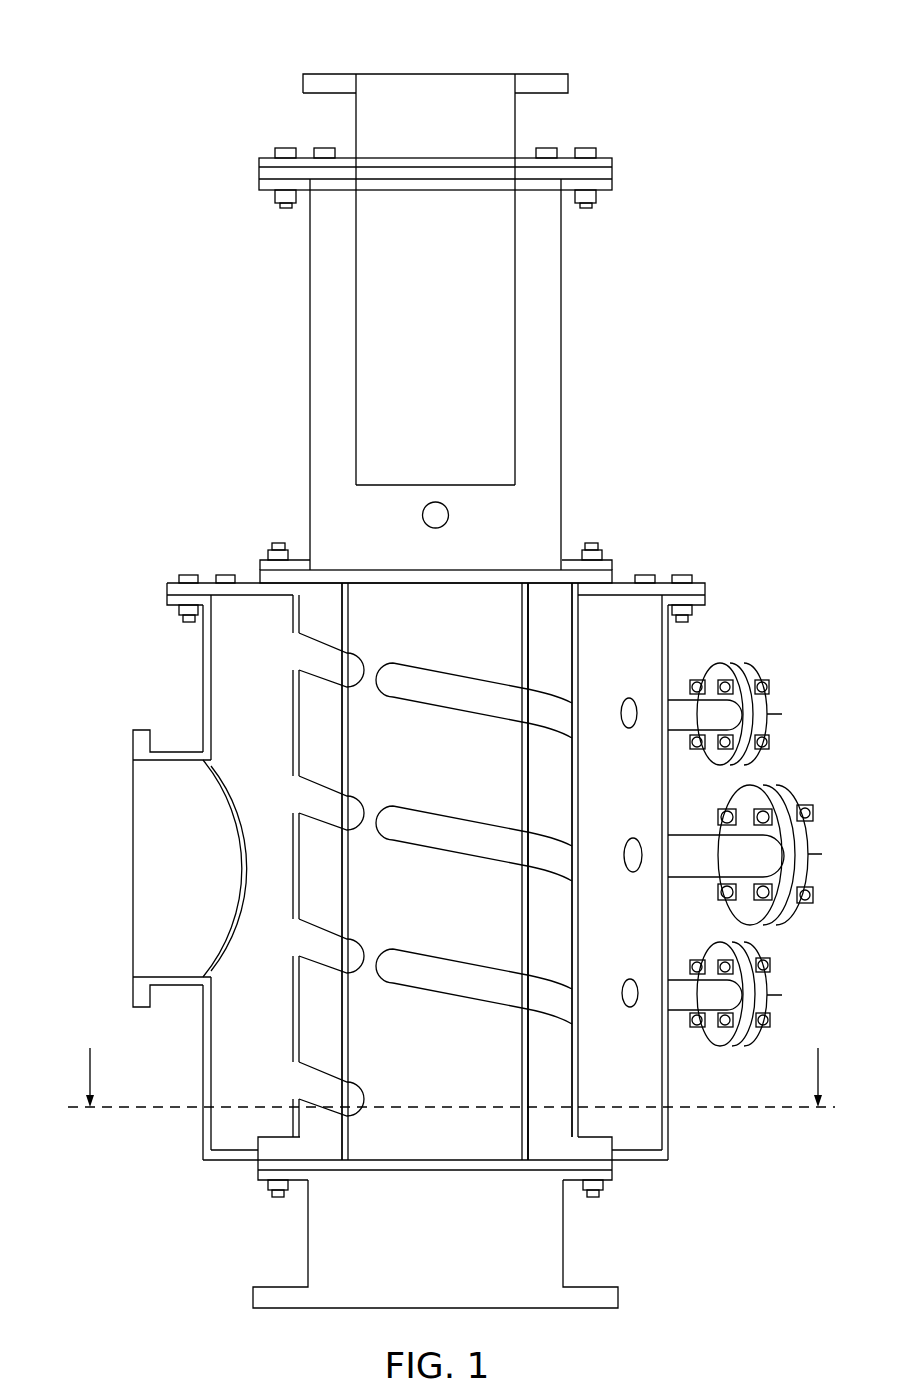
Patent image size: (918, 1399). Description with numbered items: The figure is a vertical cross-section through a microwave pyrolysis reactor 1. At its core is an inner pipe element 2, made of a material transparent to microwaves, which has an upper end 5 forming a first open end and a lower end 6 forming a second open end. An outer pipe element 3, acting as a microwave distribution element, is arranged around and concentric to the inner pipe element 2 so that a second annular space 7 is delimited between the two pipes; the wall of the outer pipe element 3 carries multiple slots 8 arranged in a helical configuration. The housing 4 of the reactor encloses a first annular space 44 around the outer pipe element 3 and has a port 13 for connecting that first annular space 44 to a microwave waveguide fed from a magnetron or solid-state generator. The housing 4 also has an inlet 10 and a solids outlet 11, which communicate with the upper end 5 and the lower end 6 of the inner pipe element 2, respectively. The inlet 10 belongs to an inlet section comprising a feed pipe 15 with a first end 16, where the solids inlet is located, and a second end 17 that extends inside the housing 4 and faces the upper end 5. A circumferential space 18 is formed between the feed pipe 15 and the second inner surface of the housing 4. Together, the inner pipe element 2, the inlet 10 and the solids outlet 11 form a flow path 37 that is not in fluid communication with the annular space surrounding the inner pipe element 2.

The apparatus 1 is at (187, 390).
The inner pipe element 2 is at (517, 647).
The outer pipe element 3 is at (573, 795).
The housing 4 is at (205, 680).
The upper end 5 is at (443, 568).
The lower end 6 is at (452, 1168).
The second annular space 7 is at (555, 945).
The slots 8 is at (548, 852).
The inlet 10 is at (440, 74).
The solids outlet 11 is at (440, 1300).
The port 13 is at (137, 862).
The feed pipe 15 is at (498, 340).
The first end 16 is at (435, 50).
The second end 17 is at (410, 477).
The circumferential space 18 is at (330, 360).
The flow path 37 is at (395, 1025).
The first annular space 44 is at (240, 735).